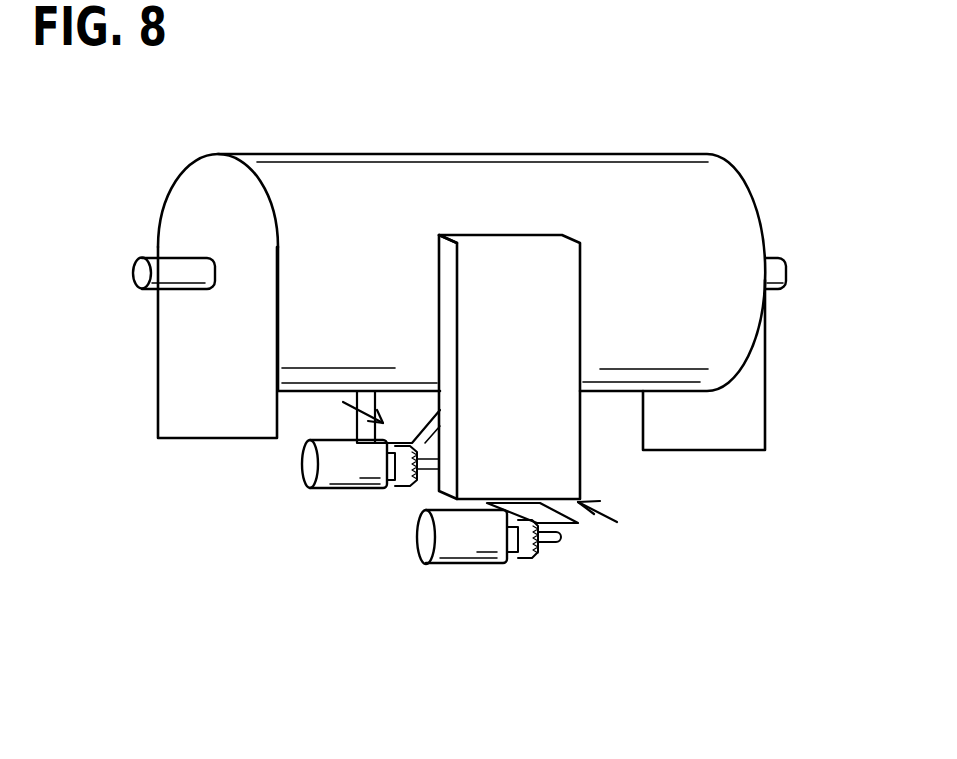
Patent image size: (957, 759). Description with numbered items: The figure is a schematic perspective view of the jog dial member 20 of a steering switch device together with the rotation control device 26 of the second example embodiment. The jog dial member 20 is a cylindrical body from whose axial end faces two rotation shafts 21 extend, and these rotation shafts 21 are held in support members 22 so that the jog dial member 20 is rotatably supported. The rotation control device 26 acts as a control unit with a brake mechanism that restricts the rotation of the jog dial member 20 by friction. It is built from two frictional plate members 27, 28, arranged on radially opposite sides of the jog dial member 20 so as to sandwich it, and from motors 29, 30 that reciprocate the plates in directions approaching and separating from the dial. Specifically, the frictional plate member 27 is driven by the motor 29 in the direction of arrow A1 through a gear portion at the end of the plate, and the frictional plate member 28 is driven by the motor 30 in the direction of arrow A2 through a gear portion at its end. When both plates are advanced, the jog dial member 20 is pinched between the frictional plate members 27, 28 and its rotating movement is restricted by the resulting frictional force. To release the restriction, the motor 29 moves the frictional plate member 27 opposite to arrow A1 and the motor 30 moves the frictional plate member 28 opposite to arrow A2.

The jog dial member 20 is at (328, 153).
The rotation shafts 21 is at (137, 263).
The support members 22 is at (218, 428).
The rotation control device 26 is at (573, 532).
The frictional plate member 27 is at (522, 260).
The frictional plate member 28 is at (352, 424).
The motor 29 is at (465, 551).
The motor 30 is at (350, 486).
The arrow A1 is at (600, 508).
The arrow A2 is at (343, 403).